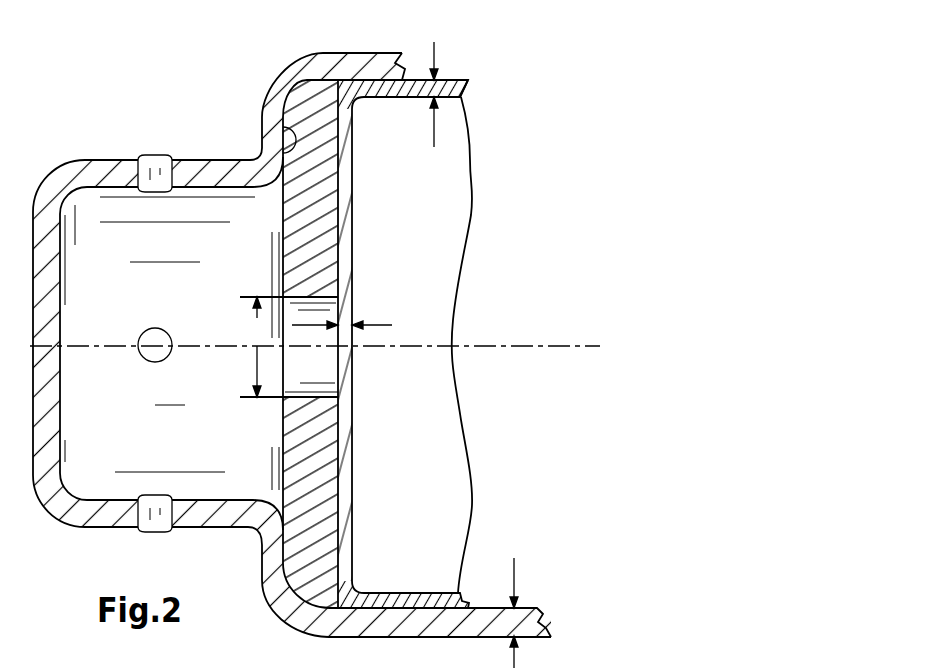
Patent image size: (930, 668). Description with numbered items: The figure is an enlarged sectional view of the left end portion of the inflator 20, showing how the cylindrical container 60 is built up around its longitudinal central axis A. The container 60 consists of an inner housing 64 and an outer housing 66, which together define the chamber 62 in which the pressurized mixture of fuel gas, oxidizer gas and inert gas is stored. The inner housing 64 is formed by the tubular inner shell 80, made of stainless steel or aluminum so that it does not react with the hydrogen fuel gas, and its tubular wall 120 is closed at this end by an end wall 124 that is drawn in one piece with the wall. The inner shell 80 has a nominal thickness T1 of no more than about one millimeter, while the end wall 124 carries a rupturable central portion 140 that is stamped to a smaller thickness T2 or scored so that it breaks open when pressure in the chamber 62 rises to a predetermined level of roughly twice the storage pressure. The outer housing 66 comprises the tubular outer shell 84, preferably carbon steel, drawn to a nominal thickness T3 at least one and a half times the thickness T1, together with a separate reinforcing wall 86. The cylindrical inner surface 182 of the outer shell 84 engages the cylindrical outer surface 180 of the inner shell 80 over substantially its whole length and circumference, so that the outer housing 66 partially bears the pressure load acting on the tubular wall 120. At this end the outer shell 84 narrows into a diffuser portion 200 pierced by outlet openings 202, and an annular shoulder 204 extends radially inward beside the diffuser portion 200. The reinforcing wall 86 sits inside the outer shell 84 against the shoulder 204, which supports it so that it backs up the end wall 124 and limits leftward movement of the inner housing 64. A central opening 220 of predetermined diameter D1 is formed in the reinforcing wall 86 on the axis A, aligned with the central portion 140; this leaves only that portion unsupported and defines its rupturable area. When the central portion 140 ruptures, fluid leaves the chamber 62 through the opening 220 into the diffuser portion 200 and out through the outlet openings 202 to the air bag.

The inflator 20 is at (512, 60).
The cylindrical container 60 is at (404, 72).
The chamber 62 is at (418, 232).
The inner housing 64 is at (455, 102).
The outer housing 66 is at (366, 48).
The inner shell 80 is at (404, 590).
The outer shell 84 is at (312, 72).
The reinforcing wall 86 is at (302, 531).
The tubular wall 120 is at (444, 597).
The end wall 124 is at (346, 456).
The rupturable central portion 140 is at (338, 368).
The cylindrical outer surface 180 is at (457, 86).
The cylindrical inner surface 182 is at (540, 608).
The diffuser portion 200 is at (100, 152).
The outlet openings 202 is at (152, 157).
The annular shoulder 204 is at (284, 150).
The central opening 220 is at (306, 398).
The nominal thickness of inner shell T1 is at (435, 140).
The thickness of central portion T2 is at (376, 322).
The nominal thickness of outer shell T3 is at (515, 567).
The predetermined diameter D1 is at (260, 347).
The longitudinal central axis A is at (511, 347).